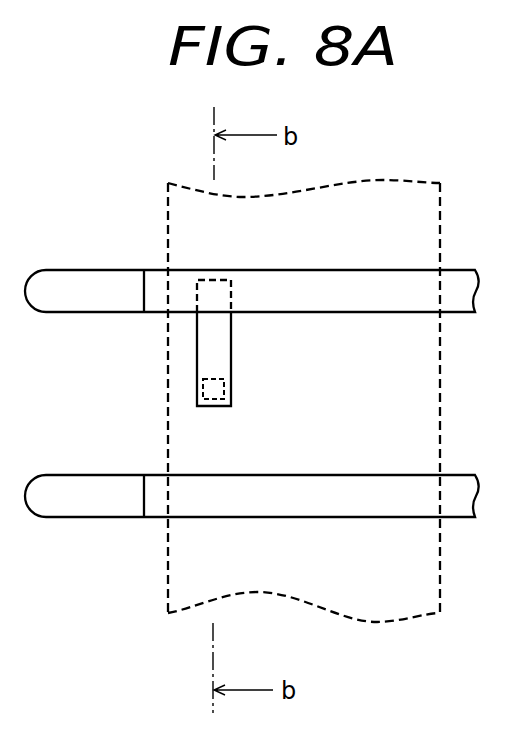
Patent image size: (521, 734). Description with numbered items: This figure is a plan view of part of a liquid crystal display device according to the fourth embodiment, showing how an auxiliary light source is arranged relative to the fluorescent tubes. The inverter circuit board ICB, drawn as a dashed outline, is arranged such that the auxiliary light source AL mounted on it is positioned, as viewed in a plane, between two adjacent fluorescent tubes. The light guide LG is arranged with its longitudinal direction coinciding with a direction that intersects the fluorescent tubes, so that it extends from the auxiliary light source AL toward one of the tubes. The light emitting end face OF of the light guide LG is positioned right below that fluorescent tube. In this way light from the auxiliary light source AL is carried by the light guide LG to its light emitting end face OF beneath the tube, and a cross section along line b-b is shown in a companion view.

The light emitting end face OF is at (218, 285).
The light guide LG is at (197, 355).
The auxiliary light source AL is at (203, 390).
The inverter circuit board ICB is at (397, 620).